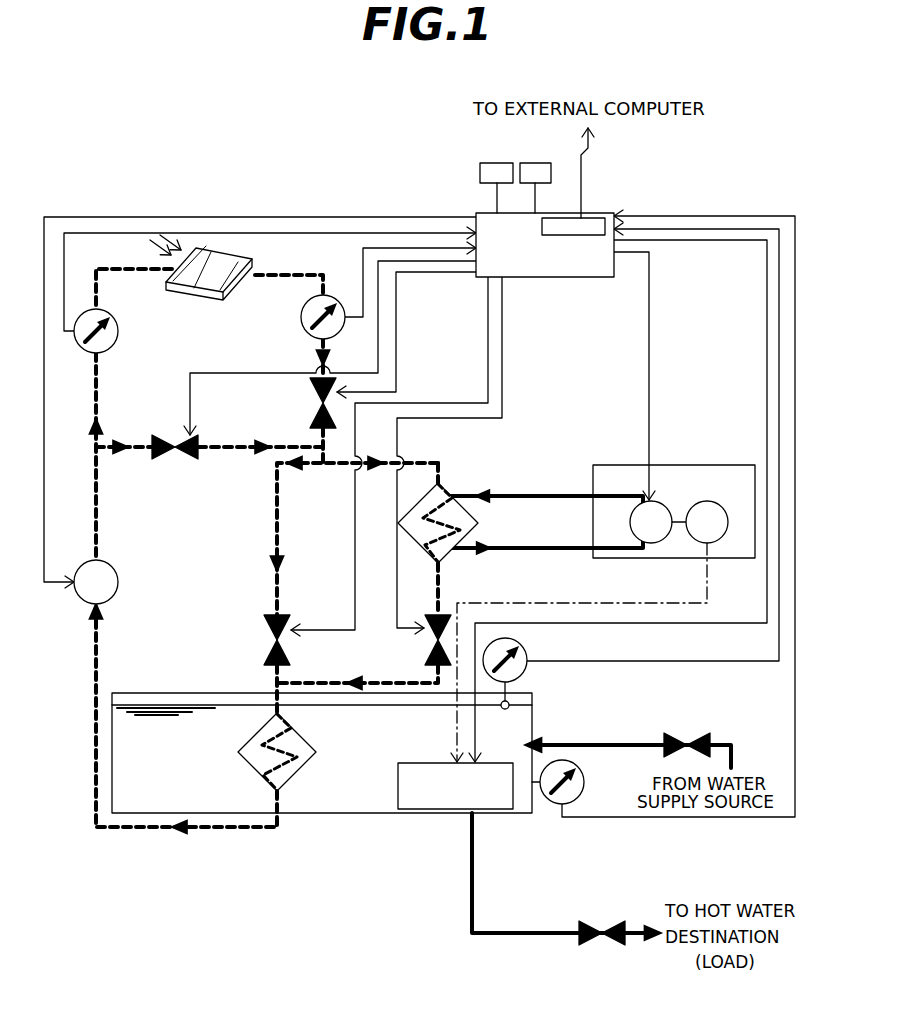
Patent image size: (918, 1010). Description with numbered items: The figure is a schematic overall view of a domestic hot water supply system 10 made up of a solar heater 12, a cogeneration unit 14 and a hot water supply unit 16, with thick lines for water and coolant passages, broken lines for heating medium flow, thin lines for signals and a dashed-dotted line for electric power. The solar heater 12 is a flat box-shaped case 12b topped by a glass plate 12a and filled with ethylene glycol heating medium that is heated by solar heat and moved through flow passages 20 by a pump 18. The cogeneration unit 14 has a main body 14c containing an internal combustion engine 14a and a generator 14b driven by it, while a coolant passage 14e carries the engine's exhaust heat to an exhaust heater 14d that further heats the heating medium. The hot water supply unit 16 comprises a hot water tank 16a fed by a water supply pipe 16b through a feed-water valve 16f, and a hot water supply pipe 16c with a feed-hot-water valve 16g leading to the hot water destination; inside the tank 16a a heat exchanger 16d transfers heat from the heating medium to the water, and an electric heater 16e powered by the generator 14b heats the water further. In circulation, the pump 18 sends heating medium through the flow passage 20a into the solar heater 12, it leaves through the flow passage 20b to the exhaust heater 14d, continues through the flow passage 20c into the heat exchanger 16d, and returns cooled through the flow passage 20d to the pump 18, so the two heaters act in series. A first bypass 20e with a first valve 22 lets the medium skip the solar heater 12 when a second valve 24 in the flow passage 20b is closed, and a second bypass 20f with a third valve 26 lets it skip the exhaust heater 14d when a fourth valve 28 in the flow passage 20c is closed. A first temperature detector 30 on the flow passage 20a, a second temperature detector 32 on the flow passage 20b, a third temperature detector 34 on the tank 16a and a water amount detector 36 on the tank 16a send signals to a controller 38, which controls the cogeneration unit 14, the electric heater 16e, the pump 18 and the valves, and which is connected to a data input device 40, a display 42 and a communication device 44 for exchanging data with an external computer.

The hot water supply system 10 is at (707, 183).
The solar heater 12 is at (229, 297).
The glass plate 12a is at (212, 256).
The case 12b is at (233, 292).
The cogeneration unit 14 is at (580, 482).
The internal combustion engine 14a is at (660, 502).
The generator 14b is at (715, 502).
The main body 14c is at (662, 465).
The exhaust heater 14d is at (450, 490).
The coolant passage 14e is at (522, 547).
The hot water supply unit 16 is at (421, 819).
The hot water tank 16a is at (313, 813).
The water supply pipe 16b is at (598, 745).
The hot water supply pipe 16c is at (474, 900).
The heat exchanger 16d is at (296, 733).
The electric heater 16e is at (405, 763).
The feed-water valve 16f is at (673, 740).
The feed-hot-water valve 16g is at (588, 926).
The pump 18 is at (81, 599).
The flow passages 20 is at (273, 573).
The flow passage 20a is at (98, 381).
The flow passage 20b is at (285, 278).
The flow passage 20c is at (440, 590).
The flow passage 20d is at (136, 830).
The first bypass 20e is at (211, 450).
The second bypass 20f is at (272, 532).
The first open/close valve 22 is at (160, 458).
The second open/close valve 24 is at (310, 398).
The third open/close valve 26 is at (264, 638).
The fourth open/close valve 28 is at (425, 650).
The first temperature detector 30 is at (118, 333).
The second temperature detector 32 is at (306, 328).
The third temperature detector 34 is at (584, 783).
The water amount detector 36 is at (523, 676).
The controller 38 is at (479, 212).
The data input device 40 is at (491, 163).
The display 42 is at (530, 163).
The communication device 44 is at (592, 218).